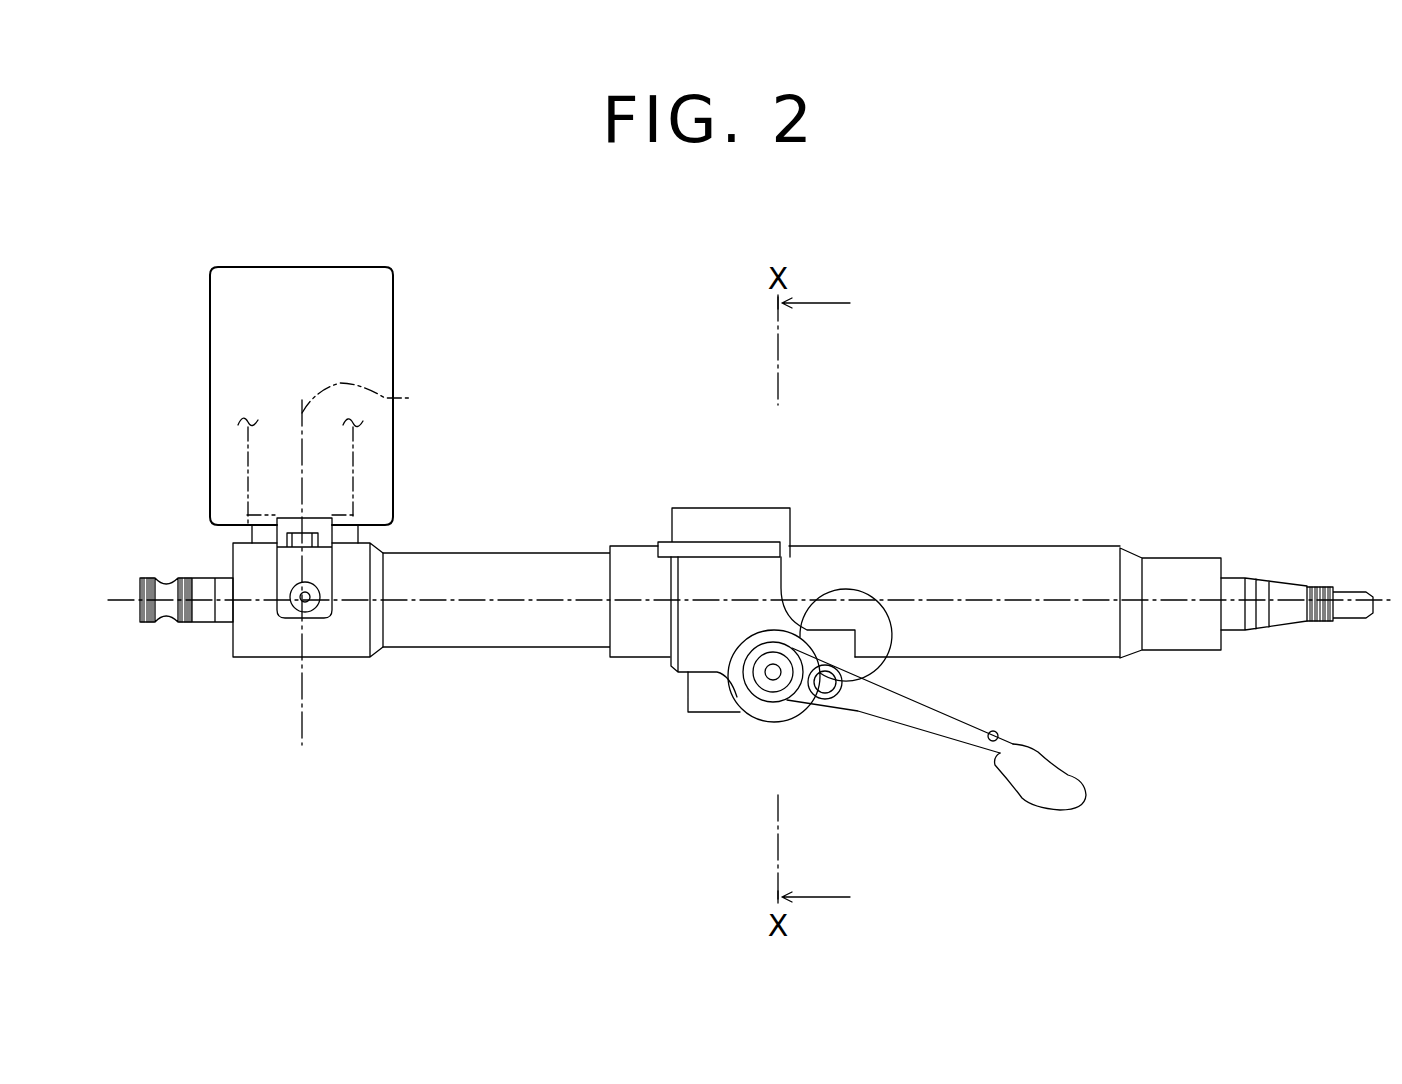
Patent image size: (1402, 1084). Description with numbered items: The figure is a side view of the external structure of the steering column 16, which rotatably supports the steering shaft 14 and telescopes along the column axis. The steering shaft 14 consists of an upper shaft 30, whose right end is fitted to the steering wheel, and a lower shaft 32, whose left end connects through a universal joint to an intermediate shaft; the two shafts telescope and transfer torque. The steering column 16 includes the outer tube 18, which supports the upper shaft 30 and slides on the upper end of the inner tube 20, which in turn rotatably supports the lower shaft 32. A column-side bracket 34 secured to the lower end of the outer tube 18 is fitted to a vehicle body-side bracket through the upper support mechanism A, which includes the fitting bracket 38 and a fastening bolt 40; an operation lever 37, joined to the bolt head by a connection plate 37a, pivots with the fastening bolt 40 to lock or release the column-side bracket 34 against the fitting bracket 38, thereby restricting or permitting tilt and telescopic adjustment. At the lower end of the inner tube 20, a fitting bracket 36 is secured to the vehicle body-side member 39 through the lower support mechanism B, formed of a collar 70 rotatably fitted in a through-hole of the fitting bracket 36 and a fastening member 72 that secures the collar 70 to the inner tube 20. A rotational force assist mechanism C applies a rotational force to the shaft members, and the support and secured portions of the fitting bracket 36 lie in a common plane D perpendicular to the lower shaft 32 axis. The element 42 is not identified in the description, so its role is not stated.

The steering shaft 14 is at (1238, 562).
The steering column 16 is at (905, 535).
The outer tube 18 is at (1012, 562).
The inner tube 20 is at (498, 553).
The upper shaft 30 is at (1285, 619).
The lower shaft 32 is at (202, 617).
The column-side bracket 34 is at (710, 698).
The fitting bracket 36 is at (320, 550).
The operation lever 37 is at (938, 713).
The connection plate 37a is at (802, 683).
The fitting bracket 38 is at (730, 517).
The vehicle body-side member 39 is at (248, 470).
The fastening bolt 40 is at (773, 688).
The housing body 42 is at (690, 648).
The collar 70 is at (310, 598).
The fastening member 72 is at (313, 600).
The upper support mechanism A is at (768, 496).
The lower support mechanism B is at (332, 504).
The rotational force assist mechanism C is at (408, 302).
The plane D is at (412, 398).